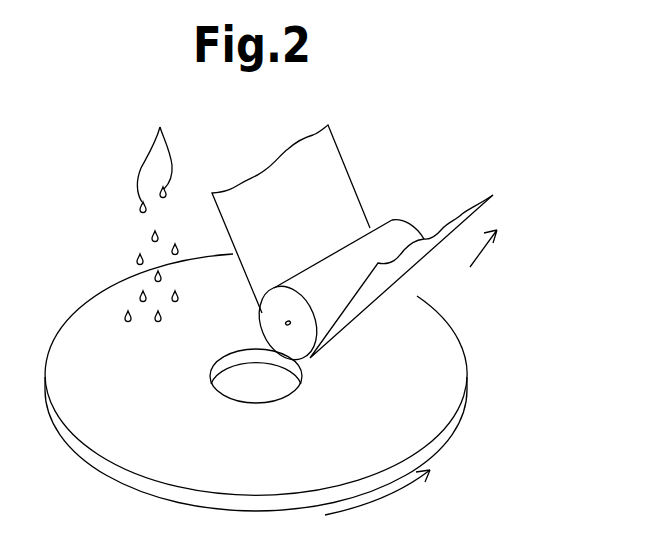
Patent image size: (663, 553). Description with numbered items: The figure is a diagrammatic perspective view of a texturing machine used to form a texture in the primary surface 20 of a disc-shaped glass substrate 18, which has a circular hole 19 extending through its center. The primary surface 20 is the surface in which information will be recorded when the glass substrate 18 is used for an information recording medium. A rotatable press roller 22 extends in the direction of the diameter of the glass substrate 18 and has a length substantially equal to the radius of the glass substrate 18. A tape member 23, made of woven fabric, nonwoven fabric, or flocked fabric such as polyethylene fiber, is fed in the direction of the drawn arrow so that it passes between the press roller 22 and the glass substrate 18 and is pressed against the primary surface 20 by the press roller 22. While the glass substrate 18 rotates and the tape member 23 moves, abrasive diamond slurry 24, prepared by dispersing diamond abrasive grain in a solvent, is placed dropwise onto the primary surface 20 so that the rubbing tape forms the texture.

The glass substrate 18 is at (462, 362).
The circular hole 19 is at (237, 351).
The primary surface 20 is at (440, 318).
The press roller 22 is at (397, 224).
The tape member 23 is at (335, 163).
The diamond slurry 24 is at (151, 208).